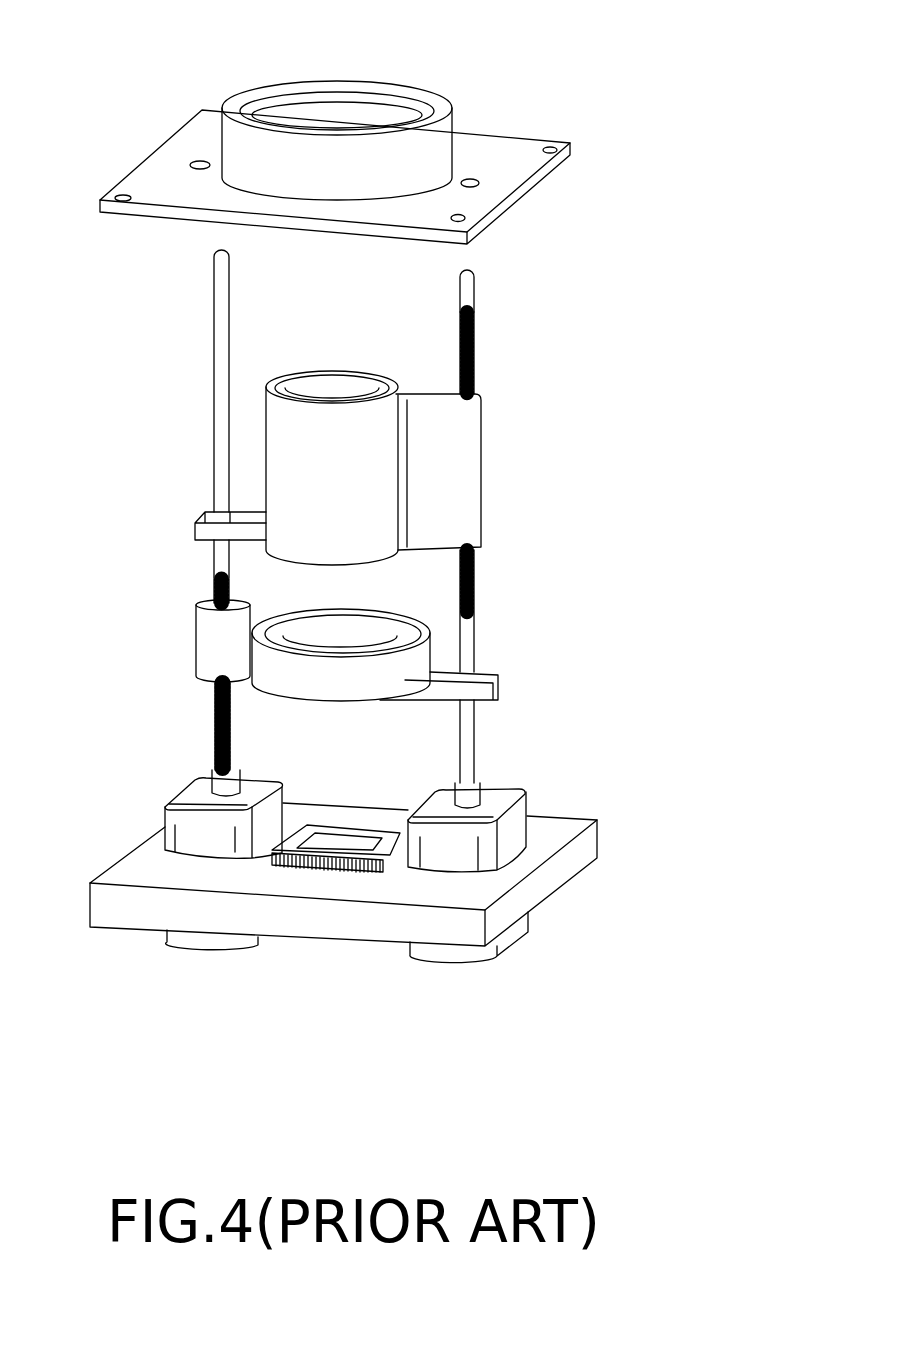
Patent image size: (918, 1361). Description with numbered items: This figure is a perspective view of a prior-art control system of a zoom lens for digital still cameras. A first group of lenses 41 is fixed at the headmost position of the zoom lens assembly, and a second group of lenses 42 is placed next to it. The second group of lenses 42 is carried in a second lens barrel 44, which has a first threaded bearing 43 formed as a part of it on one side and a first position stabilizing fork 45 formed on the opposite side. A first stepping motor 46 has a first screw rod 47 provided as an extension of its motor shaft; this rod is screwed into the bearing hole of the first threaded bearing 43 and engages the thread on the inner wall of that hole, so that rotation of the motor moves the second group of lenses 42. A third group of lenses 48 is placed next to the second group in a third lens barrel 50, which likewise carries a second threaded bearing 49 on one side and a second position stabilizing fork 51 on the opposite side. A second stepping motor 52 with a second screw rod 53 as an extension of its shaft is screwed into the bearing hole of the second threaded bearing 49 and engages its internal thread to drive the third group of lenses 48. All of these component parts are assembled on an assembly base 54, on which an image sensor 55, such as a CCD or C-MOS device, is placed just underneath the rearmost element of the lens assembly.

The first group of lenses 41 is at (380, 118).
The second group of lenses 42 is at (323, 393).
The first threaded bearing 43 is at (470, 428).
The second lens barrel 44 is at (358, 475).
The first position stabilizing fork 45 is at (197, 528).
The first stepping motor 46 is at (520, 828).
The first screw rod 47 is at (474, 333).
The third group of lenses 48 is at (363, 642).
The second threaded bearing 49 is at (213, 657).
The third lens barrel 50 is at (328, 699).
The second position stabilizing fork 51 is at (499, 697).
The second stepping motor 52 is at (198, 847).
The second screw rod 53 is at (225, 737).
The assembly base 54 is at (342, 920).
The image sensor 55 is at (328, 855).